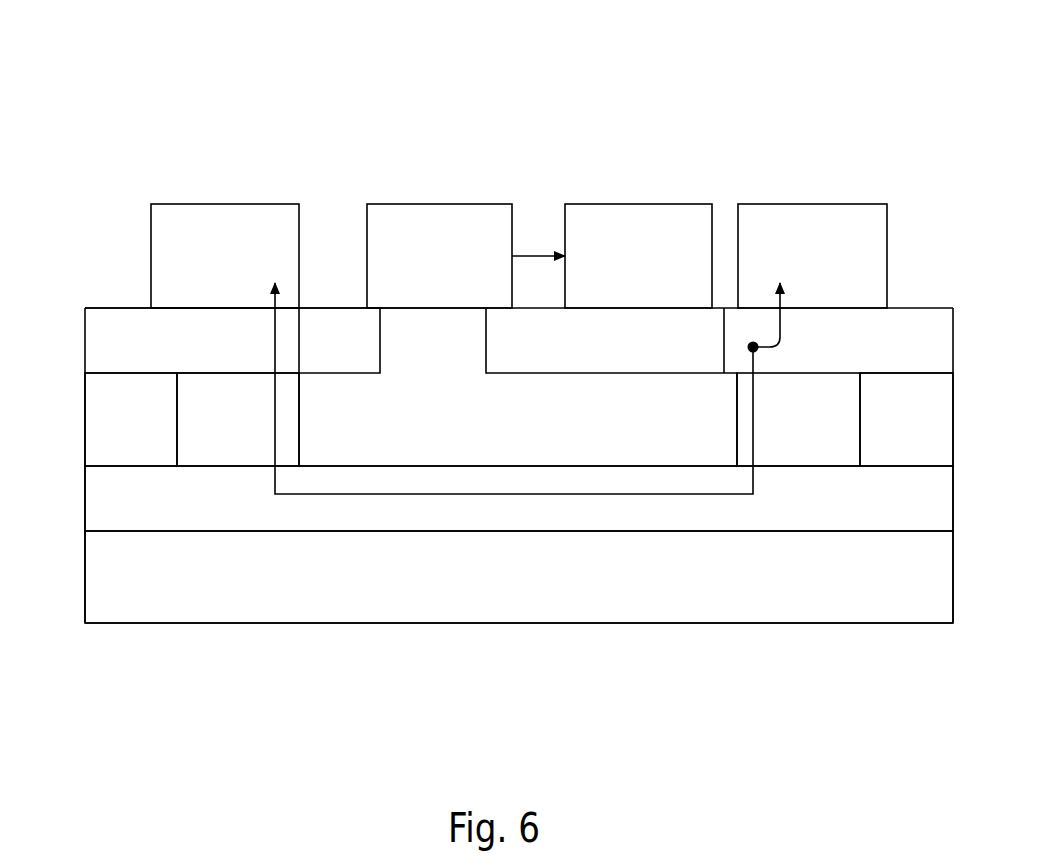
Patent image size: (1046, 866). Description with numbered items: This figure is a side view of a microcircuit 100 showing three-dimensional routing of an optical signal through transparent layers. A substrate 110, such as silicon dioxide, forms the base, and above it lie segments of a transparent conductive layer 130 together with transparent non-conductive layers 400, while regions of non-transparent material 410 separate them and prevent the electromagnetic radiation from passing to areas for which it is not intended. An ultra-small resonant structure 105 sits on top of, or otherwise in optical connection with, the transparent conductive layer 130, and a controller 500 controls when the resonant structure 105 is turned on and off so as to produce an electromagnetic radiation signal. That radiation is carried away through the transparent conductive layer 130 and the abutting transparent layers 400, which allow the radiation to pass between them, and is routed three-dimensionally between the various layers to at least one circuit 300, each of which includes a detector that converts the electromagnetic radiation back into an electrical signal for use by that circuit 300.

The microcircuit 100 is at (892, 43).
The substrate 110 is at (519, 577).
The transparent conductive layer 130 is at (519, 419).
The non-transparent material 410 is at (519, 387).
The transparent non-conductive layer 400 is at (518, 419).
The circuit 300 is at (519, 256).
The controller 500 is at (466, 256).
The ultra-small resonant structure 105 is at (527, 349).